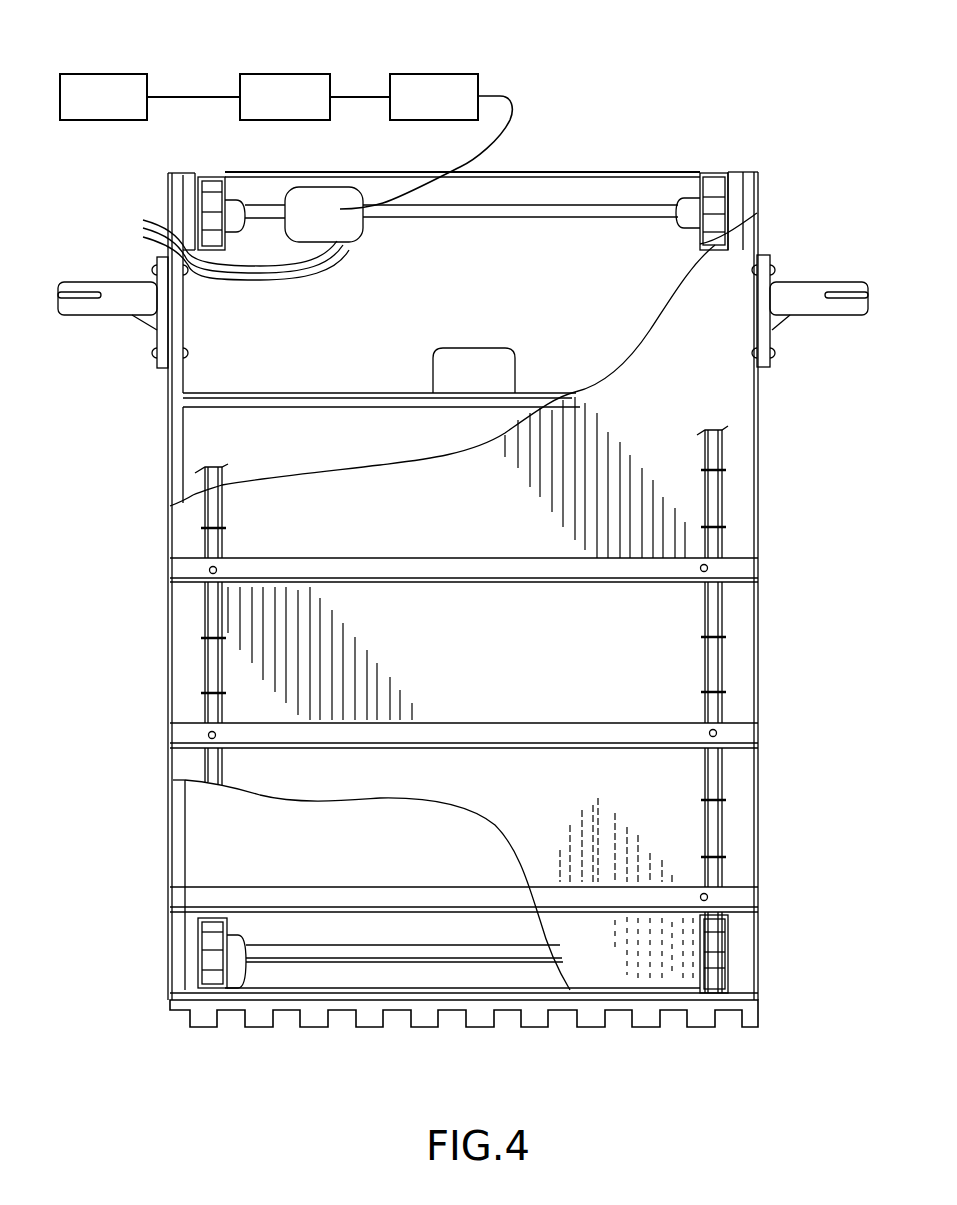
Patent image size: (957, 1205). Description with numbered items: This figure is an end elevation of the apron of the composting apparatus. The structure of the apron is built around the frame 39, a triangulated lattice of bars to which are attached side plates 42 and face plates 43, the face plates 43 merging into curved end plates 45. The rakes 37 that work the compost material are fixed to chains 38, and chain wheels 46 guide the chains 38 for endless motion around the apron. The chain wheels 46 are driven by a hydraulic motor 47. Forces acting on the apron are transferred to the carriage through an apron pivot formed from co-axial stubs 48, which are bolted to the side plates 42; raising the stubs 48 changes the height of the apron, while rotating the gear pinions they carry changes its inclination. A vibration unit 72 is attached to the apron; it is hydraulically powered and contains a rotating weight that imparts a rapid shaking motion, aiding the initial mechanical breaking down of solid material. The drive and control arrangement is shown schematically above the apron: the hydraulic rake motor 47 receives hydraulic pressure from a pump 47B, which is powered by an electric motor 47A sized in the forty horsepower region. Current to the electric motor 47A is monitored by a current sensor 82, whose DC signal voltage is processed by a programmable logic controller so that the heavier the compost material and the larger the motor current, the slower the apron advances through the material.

The rake 37 is at (168, 732).
The chain 38 is at (207, 658).
The frame 39 is at (245, 398).
The side plate 42 is at (167, 418).
The face plate 43 is at (737, 442).
The curved end plate 45 is at (540, 173).
The chain wheel 46 is at (208, 175).
The hydraulic motor 47 is at (347, 232).
The electric motor 47A is at (310, 62).
The pump 47B is at (426, 107).
The stub 48 is at (125, 293).
The vibration unit 72 is at (483, 353).
The current sensor 82 is at (136, 62).